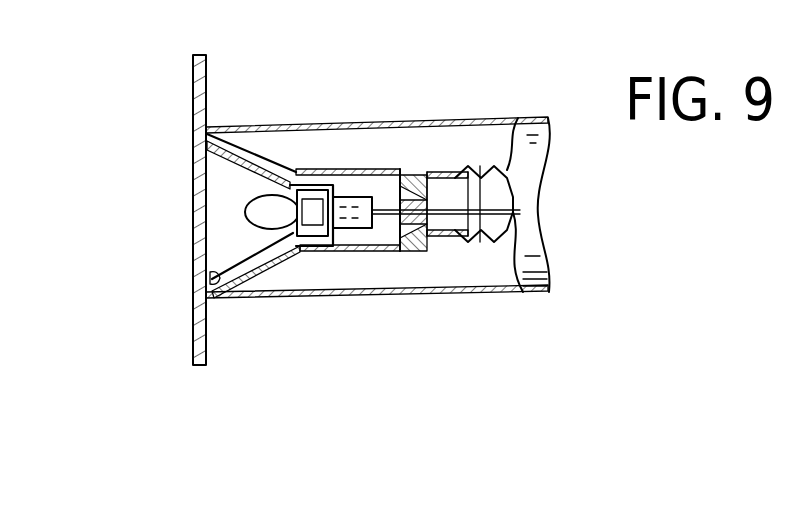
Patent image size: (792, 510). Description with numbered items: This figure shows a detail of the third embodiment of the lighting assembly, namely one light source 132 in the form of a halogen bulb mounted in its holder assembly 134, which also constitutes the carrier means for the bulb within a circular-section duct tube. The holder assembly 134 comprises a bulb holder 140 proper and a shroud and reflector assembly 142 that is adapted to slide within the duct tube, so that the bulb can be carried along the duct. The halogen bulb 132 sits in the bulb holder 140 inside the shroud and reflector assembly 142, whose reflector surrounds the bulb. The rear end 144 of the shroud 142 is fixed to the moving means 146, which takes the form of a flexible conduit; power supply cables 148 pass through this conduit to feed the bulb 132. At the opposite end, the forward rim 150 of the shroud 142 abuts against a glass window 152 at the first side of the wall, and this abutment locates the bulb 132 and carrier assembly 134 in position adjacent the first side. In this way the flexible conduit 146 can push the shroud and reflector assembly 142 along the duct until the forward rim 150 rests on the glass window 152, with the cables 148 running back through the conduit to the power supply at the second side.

The light source 132 is at (297, 175).
The holder assembly 134 is at (342, 157).
The bulb holder 140 is at (360, 232).
The shroud and reflector assembly 142 is at (268, 207).
The rear end of the shroud 144 is at (438, 251).
The moving means 146 is at (478, 166).
The power supply cables 148 is at (507, 197).
The forward rim of the shroud 150 is at (212, 272).
The glass window 152 is at (193, 108).